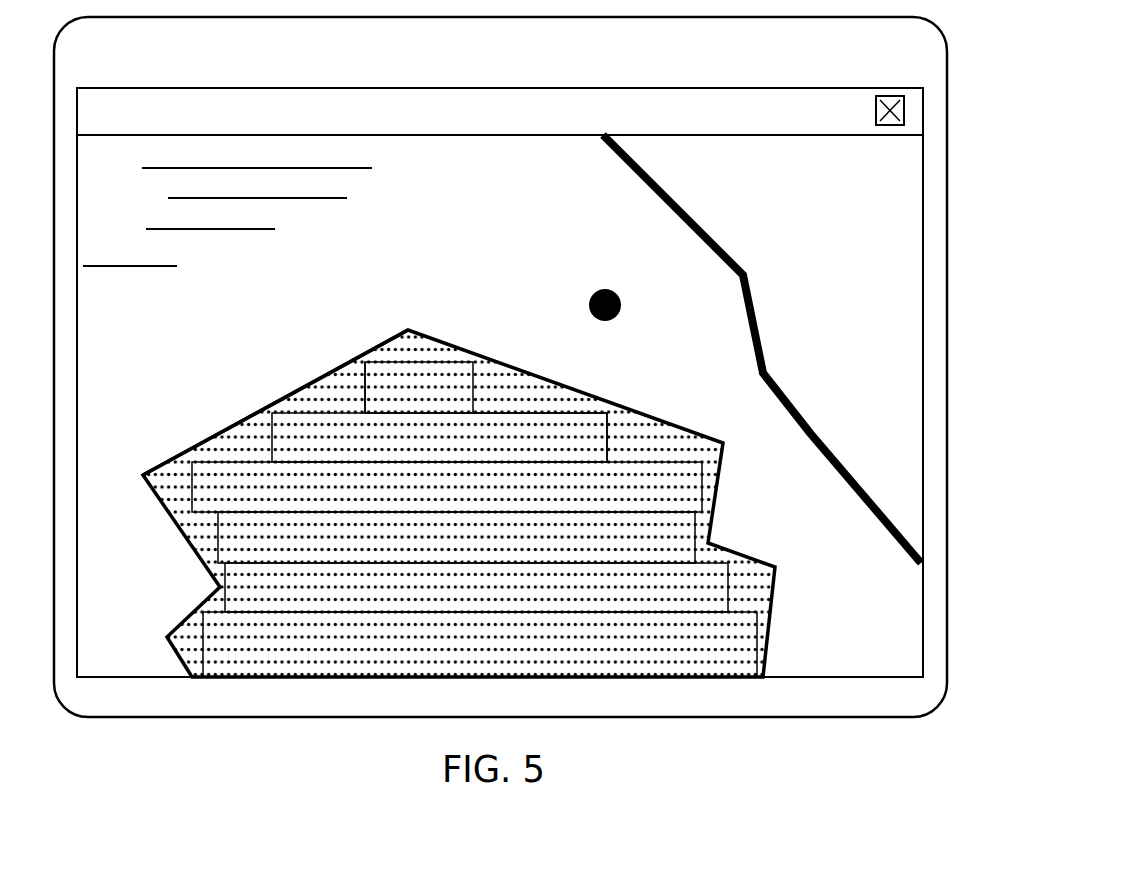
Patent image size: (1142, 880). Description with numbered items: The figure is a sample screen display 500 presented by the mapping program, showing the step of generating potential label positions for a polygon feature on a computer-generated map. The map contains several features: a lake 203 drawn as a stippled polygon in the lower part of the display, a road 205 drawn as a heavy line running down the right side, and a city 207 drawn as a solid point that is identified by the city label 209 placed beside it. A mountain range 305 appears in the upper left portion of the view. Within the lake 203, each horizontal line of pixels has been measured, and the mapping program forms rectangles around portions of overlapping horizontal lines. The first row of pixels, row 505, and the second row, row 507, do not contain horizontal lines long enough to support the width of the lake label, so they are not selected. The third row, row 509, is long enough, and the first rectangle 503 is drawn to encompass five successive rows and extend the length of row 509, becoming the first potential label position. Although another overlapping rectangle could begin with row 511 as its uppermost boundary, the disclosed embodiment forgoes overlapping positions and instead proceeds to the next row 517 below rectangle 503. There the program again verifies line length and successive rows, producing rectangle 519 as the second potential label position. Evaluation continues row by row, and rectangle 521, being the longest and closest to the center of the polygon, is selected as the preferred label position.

The screen display 500 is at (990, 200).
The mountain range 305 is at (206, 237).
The road 205 is at (706, 229).
The city label 209 is at (538, 280).
The city 207 is at (618, 317).
The lake 203 is at (730, 549).
The first row of pixels 505 is at (432, 336).
The first rectangle 503 is at (447, 356).
The second row of pixels 507 is at (378, 348).
The third row of pixels 509 is at (343, 367).
The row of pixels 511 is at (483, 372).
The next row of pixels 517 is at (588, 408).
The second rectangle 519 is at (612, 431).
The preferred label position rectangle 521 is at (706, 482).